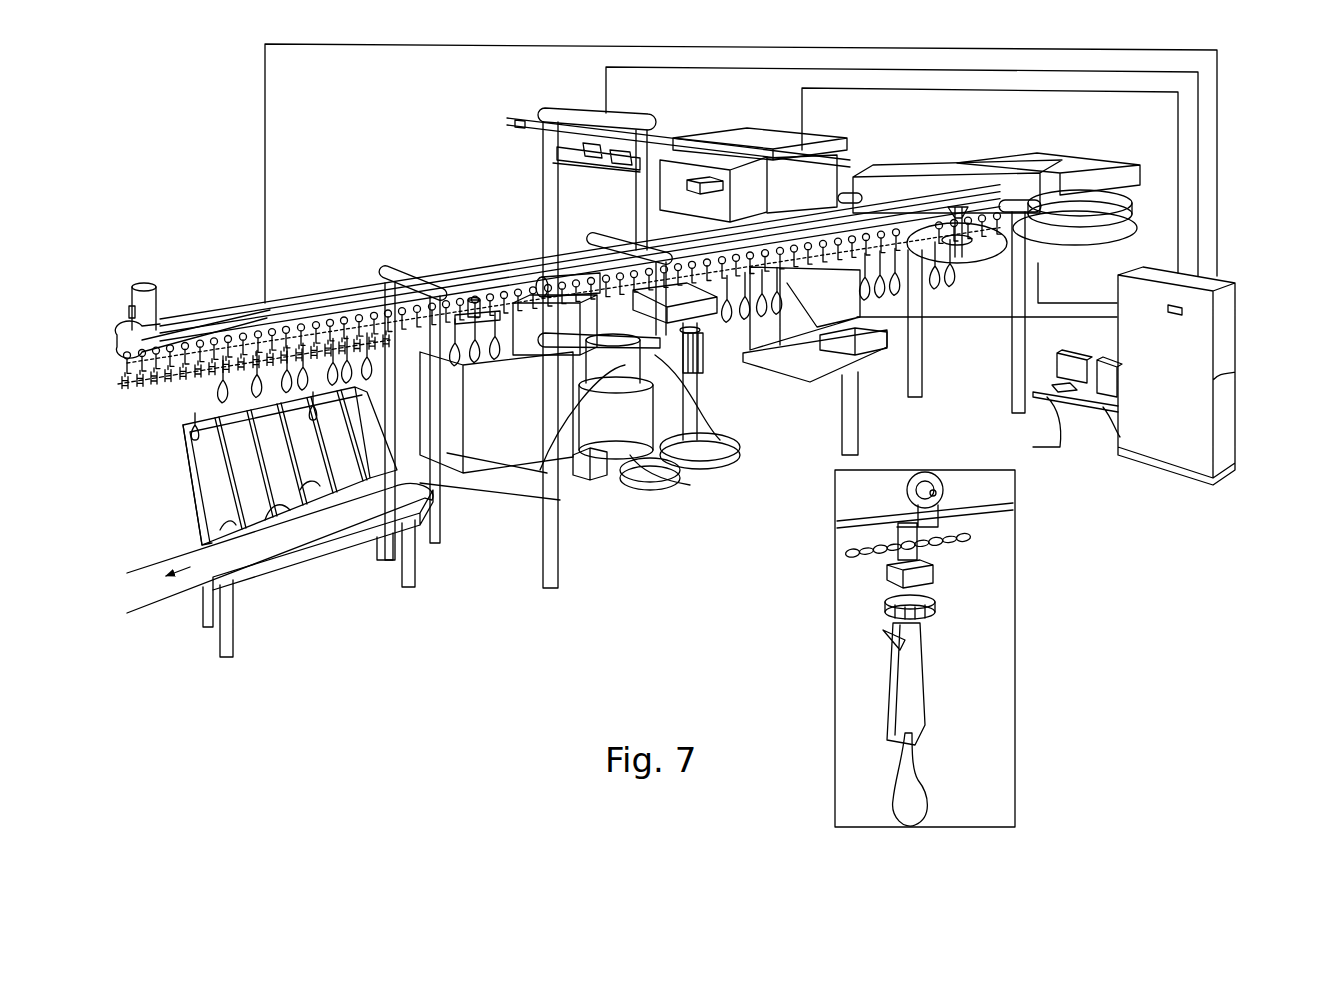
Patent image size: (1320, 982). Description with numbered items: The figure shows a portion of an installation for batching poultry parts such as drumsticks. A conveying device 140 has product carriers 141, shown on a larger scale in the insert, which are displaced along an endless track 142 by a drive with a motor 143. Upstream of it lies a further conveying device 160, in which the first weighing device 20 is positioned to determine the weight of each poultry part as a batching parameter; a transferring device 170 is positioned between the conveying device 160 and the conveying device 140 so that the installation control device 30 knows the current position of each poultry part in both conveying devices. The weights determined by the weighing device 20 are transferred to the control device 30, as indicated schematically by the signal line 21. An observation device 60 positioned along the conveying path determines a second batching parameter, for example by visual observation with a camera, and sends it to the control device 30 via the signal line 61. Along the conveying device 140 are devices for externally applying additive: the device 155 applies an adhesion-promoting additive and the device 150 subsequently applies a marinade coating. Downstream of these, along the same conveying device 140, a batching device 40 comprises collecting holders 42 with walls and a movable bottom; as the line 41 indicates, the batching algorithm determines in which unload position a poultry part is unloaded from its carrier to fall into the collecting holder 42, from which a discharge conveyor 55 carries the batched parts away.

The first weighing device 20 is at (668, 112).
The signal line 21 is at (762, 67).
The installation control device 30 is at (1238, 378).
The batching device 40 is at (170, 471).
The line 41 is at (265, 208).
The collecting holder 42 is at (207, 497).
The discharge conveyor 55 is at (160, 583).
The observation device 60 is at (835, 140).
The signal line 61 is at (958, 90).
The conveying device 140 is at (470, 262).
The product carrier 141 is at (157, 406).
The endless track 142 is at (340, 292).
The motor 143 is at (150, 310).
The additive applying device 150 is at (604, 424).
The additive applying device 155 is at (784, 390).
The conveying device 160 is at (518, 138).
The transferring device 170 is at (1013, 282).